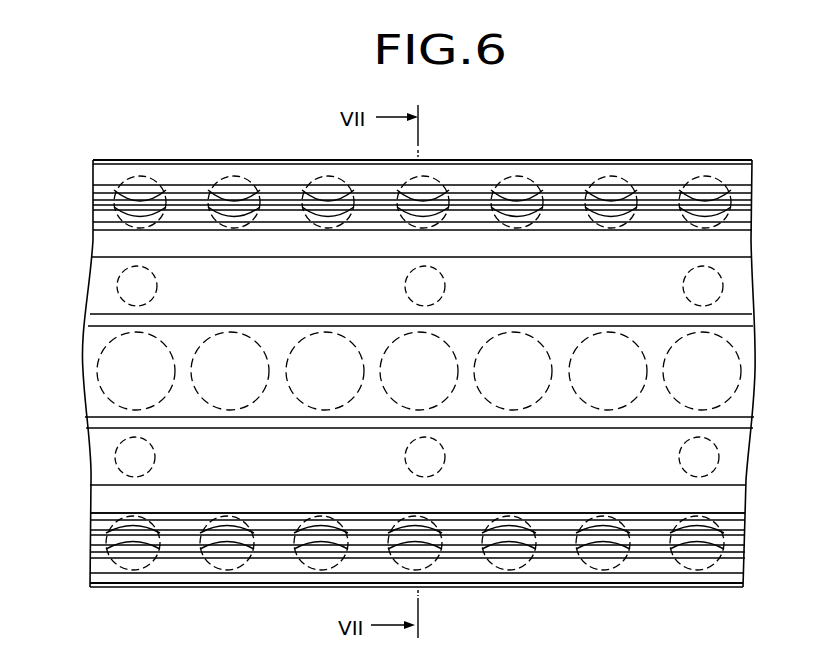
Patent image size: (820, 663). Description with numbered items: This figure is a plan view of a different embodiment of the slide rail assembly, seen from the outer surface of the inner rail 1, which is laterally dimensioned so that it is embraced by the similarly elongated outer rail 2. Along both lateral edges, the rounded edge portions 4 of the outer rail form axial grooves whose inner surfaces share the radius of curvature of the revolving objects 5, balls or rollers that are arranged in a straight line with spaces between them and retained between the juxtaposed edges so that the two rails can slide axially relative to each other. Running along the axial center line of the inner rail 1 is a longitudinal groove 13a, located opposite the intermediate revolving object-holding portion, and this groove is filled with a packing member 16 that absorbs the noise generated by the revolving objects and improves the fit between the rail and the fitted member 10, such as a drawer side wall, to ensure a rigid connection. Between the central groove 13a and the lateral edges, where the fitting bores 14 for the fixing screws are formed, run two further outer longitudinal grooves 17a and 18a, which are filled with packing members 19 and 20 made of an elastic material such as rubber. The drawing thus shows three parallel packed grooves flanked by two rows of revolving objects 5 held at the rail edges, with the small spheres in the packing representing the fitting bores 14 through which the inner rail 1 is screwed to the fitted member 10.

The inner rail 1 is at (745, 246).
The outer rail 2 is at (298, 155).
The rounded edge portions 4 is at (521, 160).
The revolving objects 5 is at (614, 178).
The fitted member 10 is at (98, 373).
The longitudinal groove 13a is at (736, 418).
The fitting bores 14 is at (112, 288).
The packing members 16 is at (745, 369).
The outer longitudinal groove 17a is at (738, 316).
The outer longitudinal groove 18a is at (726, 486).
The packing member 19 is at (740, 288).
The packing member 20 is at (734, 458).